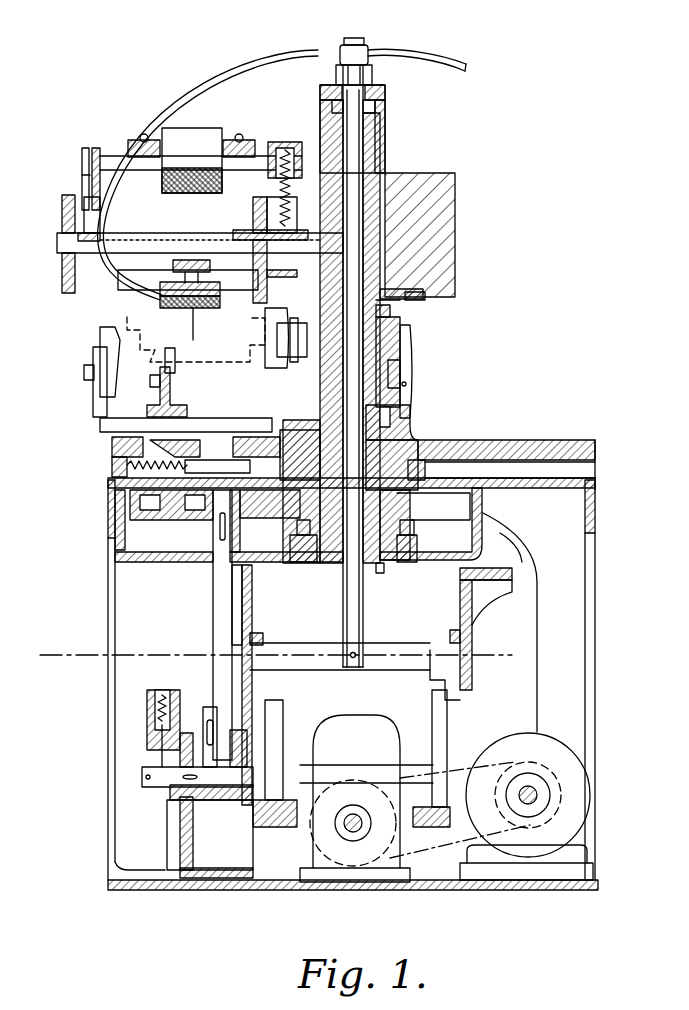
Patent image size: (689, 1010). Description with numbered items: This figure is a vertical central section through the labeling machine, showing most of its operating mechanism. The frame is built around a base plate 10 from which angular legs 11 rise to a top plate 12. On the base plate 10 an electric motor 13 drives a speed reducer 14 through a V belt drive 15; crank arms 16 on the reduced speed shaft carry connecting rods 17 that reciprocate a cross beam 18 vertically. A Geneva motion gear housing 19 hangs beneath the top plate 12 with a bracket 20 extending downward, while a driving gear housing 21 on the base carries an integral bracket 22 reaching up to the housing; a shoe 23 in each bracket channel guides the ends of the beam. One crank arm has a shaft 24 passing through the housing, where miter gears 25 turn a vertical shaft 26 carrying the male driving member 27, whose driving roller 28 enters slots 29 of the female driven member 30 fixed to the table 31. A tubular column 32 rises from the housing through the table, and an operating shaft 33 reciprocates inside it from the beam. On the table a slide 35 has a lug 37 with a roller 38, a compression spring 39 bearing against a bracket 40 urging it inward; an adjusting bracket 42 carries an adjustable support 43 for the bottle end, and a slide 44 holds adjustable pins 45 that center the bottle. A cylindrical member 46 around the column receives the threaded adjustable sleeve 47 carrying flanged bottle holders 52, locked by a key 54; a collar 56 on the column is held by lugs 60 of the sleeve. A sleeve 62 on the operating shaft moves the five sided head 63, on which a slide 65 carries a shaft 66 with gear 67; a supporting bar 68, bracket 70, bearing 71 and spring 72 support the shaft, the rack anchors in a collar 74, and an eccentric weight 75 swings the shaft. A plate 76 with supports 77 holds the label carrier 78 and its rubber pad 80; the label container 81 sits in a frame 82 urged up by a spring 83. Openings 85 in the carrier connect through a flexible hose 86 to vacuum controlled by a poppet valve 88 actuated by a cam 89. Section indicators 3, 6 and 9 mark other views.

The base plate 10 is at (480, 890).
The legs 11 is at (285, 82).
The top plate 12 is at (578, 480).
The electric motor 13 is at (526, 806).
The speed reducer 14 is at (366, 798).
The V belt drive 15 is at (468, 768).
The crank arms 16 is at (110, 655).
The connecting rods 17 is at (276, 718).
The cross beam 18 is at (276, 656).
The Geneva motion gear housing 19 is at (440, 570).
The bracket 20 is at (472, 632).
The driving gear housing 21 is at (194, 830).
The bracket 22 is at (254, 603).
The shoe 23 is at (310, 165).
The shaft 24 is at (228, 786).
The miter gears 25 is at (205, 725).
The vertical shaft 26 is at (220, 617).
The male driving member 27 is at (198, 510).
The driving roller 28 is at (132, 512).
The slots 29 is at (428, 505).
The female driven member 30 is at (405, 528).
The table 31 is at (488, 440).
The tubular column 32 is at (380, 566).
The operating shaft 33 is at (352, 600).
The slide 35 is at (120, 426).
The lug 37 is at (185, 440).
The roller 38 is at (210, 467).
The compression spring 39 is at (112, 450).
The bracket 40 is at (112, 468).
The adjusting bracket 42 is at (100, 392).
The adjustable support 43 is at (105, 345).
The slide 44 is at (156, 410).
The adjustable pins 45 is at (165, 368).
The cylindrical member 46 is at (412, 416).
The adjustable sleeve 47 is at (406, 366).
The flanged bottle holder 52 is at (270, 345).
The key 54 is at (410, 356).
The collar 56 is at (392, 316).
The lugs 60 is at (400, 328).
The sleeve 62 is at (387, 122).
The five sided head 63 is at (456, 230).
The slide 65 is at (275, 216).
The shaft 66 is at (172, 248).
The gear 67 is at (331, 366).
The supporting bar 68 is at (116, 160).
The bracket 70 is at (82, 190).
The bearing 71 is at (96, 220).
The spring 72 is at (80, 190).
The collar 74 is at (420, 292).
The eccentrically disposed weight 75 is at (62, 284).
The plate 76 is at (266, 228).
The supports 77 is at (160, 292).
The label carrier 78 is at (165, 302).
The rubber pad 80 is at (183, 308).
The label container 81 is at (200, 135).
The frame 82 is at (236, 138).
The spring 83 is at (385, 205).
The openings 85 is at (194, 315).
The flexible hose 86 is at (184, 104).
The poppet valve 88 is at (150, 715).
The cam 89 is at (160, 790).
The section line 3 is at (237, 290).
The section line 6 is at (100, 488).
The section line 9 is at (172, 45).